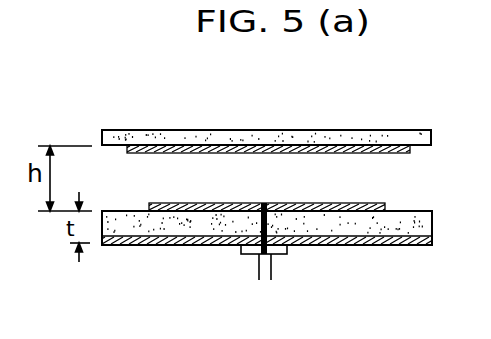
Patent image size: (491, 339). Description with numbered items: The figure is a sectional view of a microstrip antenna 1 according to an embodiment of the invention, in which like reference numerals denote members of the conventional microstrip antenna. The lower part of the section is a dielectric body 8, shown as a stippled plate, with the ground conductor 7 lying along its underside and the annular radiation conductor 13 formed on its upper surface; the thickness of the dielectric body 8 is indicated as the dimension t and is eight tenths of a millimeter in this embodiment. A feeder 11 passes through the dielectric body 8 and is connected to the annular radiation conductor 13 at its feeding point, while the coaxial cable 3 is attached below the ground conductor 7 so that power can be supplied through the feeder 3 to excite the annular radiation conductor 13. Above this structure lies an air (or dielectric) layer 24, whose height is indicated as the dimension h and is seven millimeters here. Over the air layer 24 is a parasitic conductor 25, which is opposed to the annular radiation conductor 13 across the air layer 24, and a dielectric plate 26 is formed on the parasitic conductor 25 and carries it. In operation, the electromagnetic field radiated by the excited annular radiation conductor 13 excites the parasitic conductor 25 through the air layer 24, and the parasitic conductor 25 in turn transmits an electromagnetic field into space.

The microstrip antenna 1 is at (160, 126).
The coaxial cable 3 is at (270, 272).
The ground conductor 7 is at (412, 246).
The dielectric body 8 is at (425, 228).
The feeder 11 is at (260, 230).
The annular radiation conductor 13 is at (370, 204).
The air layer 24 is at (410, 172).
The parasitic conductor 25 is at (398, 149).
The dielectric plate 26 is at (117, 142).